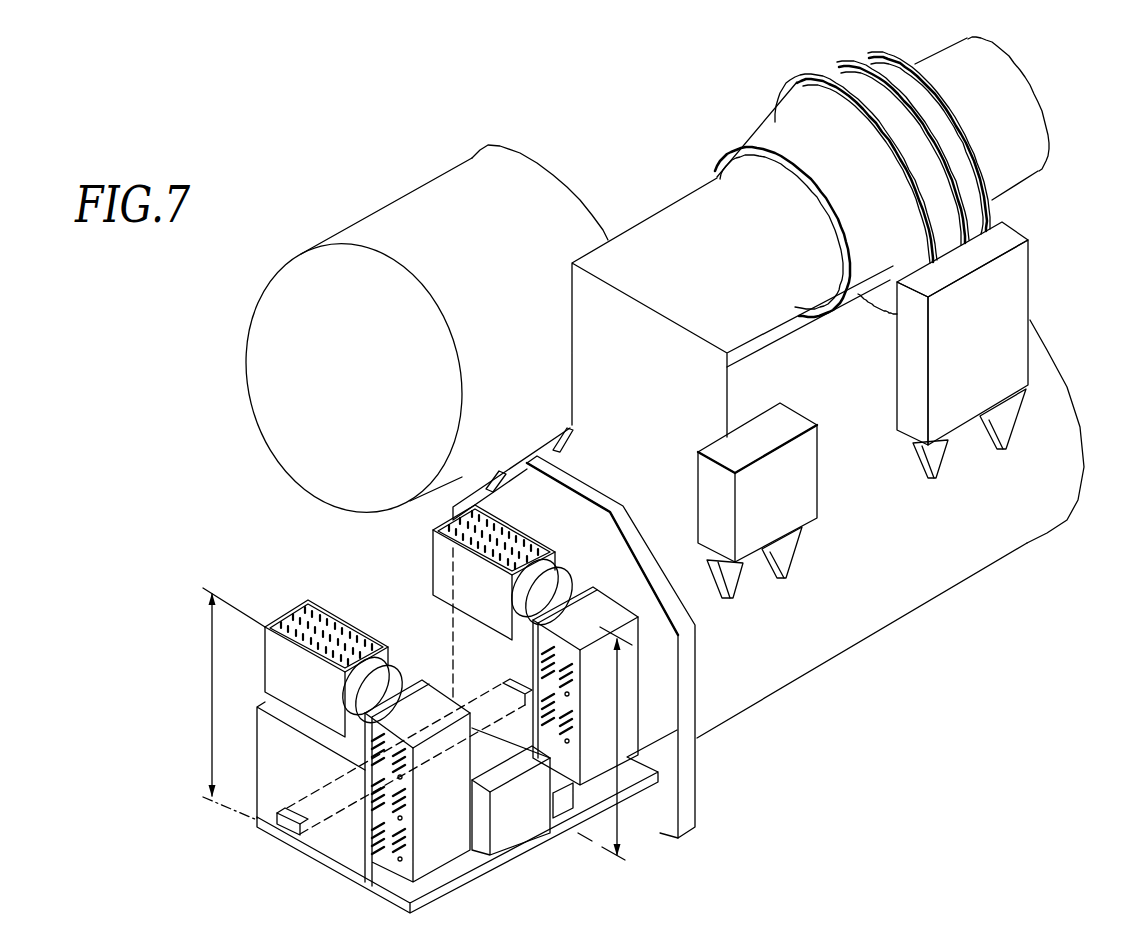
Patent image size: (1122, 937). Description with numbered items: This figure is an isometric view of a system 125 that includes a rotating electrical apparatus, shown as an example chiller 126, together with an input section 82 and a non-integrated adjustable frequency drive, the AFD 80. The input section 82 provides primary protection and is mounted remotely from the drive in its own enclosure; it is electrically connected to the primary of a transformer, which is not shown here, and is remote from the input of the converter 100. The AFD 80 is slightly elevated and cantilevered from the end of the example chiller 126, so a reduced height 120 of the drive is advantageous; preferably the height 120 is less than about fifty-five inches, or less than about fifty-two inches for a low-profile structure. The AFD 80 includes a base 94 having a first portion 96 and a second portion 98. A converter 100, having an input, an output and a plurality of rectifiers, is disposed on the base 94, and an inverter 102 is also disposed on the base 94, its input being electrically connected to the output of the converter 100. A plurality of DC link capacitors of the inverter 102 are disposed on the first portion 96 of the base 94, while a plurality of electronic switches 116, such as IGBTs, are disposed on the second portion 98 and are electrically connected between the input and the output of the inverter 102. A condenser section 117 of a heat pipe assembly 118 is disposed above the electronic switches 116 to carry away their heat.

The adjustable frequency drive 80 is at (306, 560).
The input section 82 is at (1034, 273).
The base 94 is at (320, 859).
The first portion 96 is at (397, 642).
The second portion 98 is at (560, 811).
The converter 100 is at (279, 607).
The inverter 102 is at (420, 553).
The electronic switches 116 is at (608, 584).
The condenser section 117 is at (495, 511).
The heat pipe assembly 118 is at (546, 528).
The height 120 is at (415, 724).
The system 125 is at (648, 134).
The chiller 126 is at (794, 711).